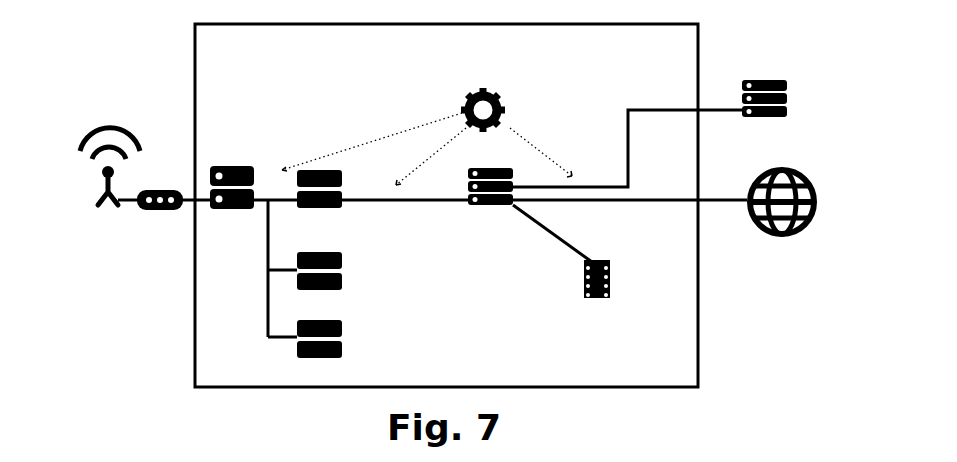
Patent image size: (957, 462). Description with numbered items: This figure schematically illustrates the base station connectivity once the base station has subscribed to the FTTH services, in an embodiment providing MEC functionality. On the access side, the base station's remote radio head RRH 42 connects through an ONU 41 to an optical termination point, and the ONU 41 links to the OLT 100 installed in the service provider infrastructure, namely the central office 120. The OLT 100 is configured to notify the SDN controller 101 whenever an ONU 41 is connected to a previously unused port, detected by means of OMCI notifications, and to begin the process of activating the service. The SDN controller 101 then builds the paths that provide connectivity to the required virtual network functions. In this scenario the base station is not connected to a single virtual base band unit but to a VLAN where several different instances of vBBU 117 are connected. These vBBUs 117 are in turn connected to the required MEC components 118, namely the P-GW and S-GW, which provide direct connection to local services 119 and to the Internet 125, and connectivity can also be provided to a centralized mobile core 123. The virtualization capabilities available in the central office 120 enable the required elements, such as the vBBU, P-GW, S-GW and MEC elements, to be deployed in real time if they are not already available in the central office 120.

The central office 120 is at (702, 30).
The remote radio head (RRH) 42 is at (68, 238).
The ONU 41 is at (150, 238).
The OLT 100 is at (240, 162).
The instances of vBBU 117 is at (346, 212).
The SDN controller 101 is at (462, 105).
The MEC components 118 is at (490, 257).
The local services 119 is at (598, 327).
The mobile core 123 is at (790, 82).
The Internet 125 is at (816, 202).